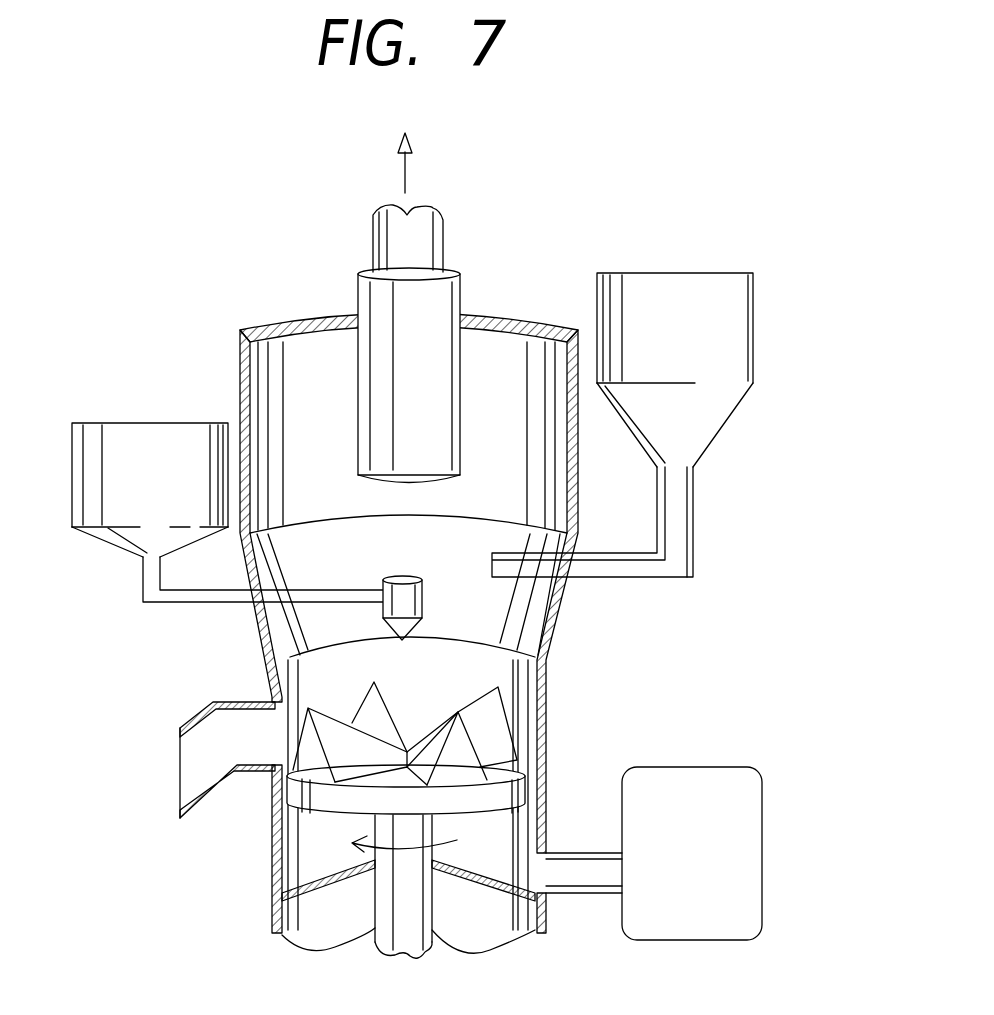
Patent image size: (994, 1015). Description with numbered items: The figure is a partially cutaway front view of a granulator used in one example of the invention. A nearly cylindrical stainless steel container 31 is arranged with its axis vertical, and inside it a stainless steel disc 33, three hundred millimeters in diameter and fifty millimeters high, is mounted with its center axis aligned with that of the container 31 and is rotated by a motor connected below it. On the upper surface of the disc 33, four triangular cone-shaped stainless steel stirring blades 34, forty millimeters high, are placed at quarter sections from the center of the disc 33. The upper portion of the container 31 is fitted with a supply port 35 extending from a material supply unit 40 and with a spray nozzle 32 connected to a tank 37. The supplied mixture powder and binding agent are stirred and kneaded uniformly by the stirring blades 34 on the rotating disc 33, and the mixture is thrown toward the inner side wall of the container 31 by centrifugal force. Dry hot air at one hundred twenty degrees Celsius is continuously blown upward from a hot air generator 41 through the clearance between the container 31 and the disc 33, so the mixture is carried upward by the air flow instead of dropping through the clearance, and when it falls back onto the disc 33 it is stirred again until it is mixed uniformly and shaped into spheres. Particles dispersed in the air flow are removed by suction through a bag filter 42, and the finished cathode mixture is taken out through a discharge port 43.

The container 31 is at (242, 390).
The spray nozzle 32 is at (392, 630).
The disc 33 is at (300, 792).
The stirring blades 34 is at (470, 747).
The supply port 35 is at (492, 570).
The tank 37 is at (135, 418).
The material supply unit 40 is at (685, 272).
The hot air generator 41 is at (713, 773).
The bag filter 42 is at (447, 333).
The discharge port 43 is at (180, 787).